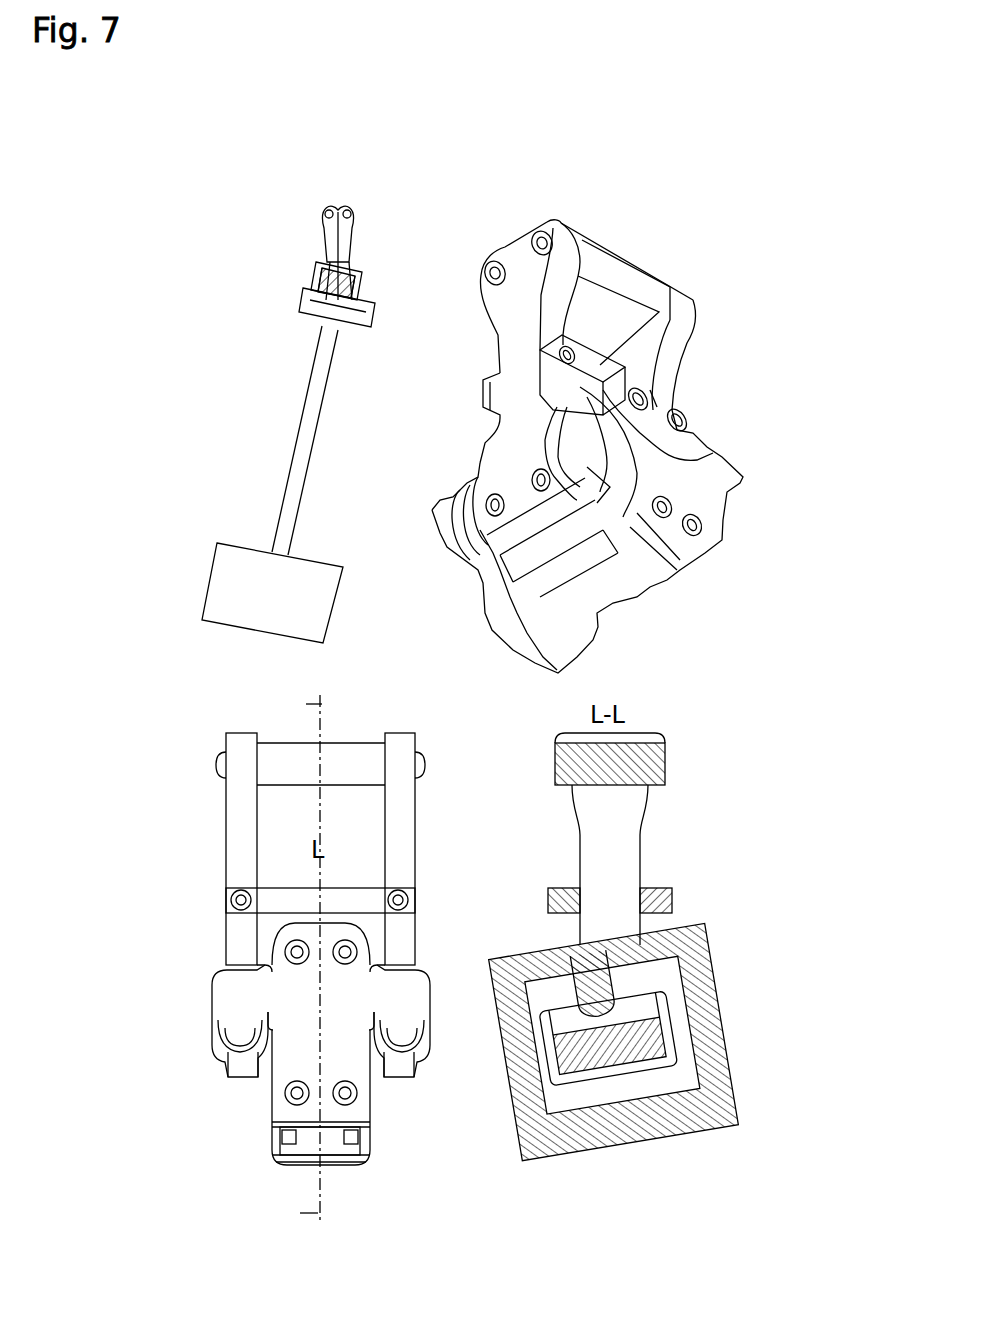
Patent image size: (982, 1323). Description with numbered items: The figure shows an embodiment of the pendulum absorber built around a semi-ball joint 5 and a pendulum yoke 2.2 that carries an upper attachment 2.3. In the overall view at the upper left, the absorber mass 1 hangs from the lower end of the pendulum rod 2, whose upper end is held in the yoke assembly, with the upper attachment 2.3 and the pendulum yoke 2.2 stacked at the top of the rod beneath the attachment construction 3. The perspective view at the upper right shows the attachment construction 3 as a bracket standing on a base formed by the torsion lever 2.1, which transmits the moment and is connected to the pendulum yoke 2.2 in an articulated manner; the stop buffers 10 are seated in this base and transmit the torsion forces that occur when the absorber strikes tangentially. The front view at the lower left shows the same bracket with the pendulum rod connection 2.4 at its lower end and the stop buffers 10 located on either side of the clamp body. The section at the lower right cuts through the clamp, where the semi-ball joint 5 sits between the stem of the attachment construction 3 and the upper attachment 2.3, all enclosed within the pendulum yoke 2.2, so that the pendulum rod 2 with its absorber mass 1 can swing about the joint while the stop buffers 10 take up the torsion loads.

The absorber mass 1 is at (250, 575).
The pendulum rod 2 is at (300, 422).
The torsion lever 2.1 is at (608, 586).
The pendulum yoke 2.2 is at (303, 313).
The upper attachment 2.3 is at (322, 268).
The pendulum rod connection 2.4 is at (328, 1140).
The attachment construction 3 is at (340, 205).
The semi-ball joint 5 is at (608, 985).
The stop buffer 10 is at (570, 447).